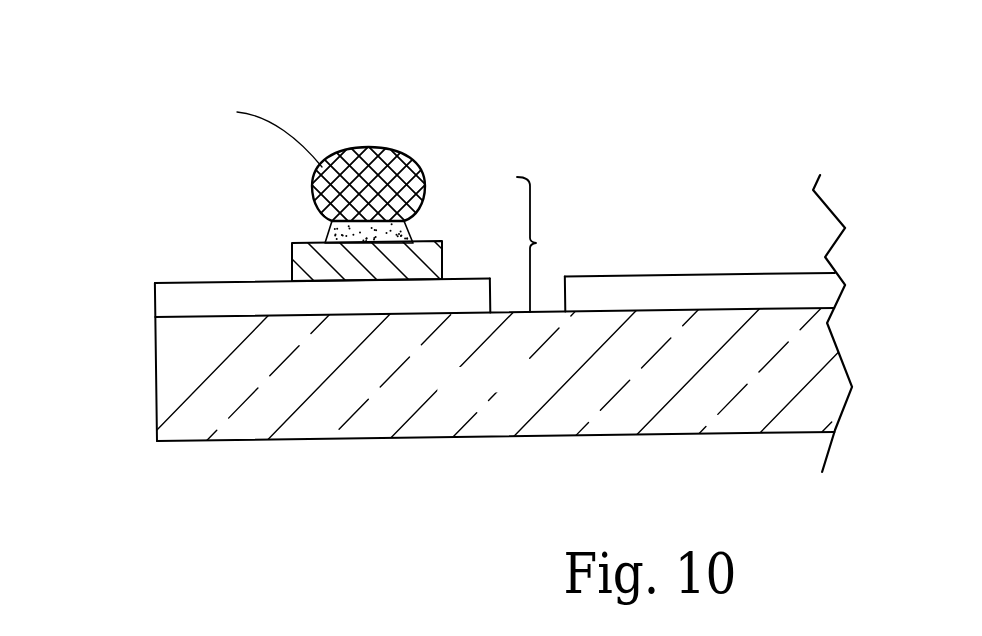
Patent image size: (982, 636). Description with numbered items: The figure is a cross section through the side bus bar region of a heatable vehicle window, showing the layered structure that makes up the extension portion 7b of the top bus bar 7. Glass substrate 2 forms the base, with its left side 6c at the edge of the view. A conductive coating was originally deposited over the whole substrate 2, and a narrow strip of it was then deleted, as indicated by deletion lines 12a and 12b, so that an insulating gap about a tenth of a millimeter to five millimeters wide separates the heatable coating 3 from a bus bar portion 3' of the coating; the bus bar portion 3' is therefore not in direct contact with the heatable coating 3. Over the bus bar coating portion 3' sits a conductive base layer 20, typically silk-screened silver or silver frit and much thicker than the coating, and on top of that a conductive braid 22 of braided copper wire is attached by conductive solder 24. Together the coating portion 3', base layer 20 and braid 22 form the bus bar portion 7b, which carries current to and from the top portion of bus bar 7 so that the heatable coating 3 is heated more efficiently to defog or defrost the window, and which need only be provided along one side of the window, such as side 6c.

The first glass substrate 2 is at (381, 414).
The heatable coating 3 is at (700, 245).
The bus bar portion of the coating 3' is at (280, 300).
The left side 6c is at (157, 382).
The top bus bar 7 is at (540, 226).
The extension portion of bus bar 7b is at (464, 165).
The deletion line 12a is at (490, 297).
The deletion line 12b is at (566, 293).
The conductive base layer 20 is at (292, 262).
The conductive braid 22 is at (365, 147).
The conductive solder 24 is at (408, 230).